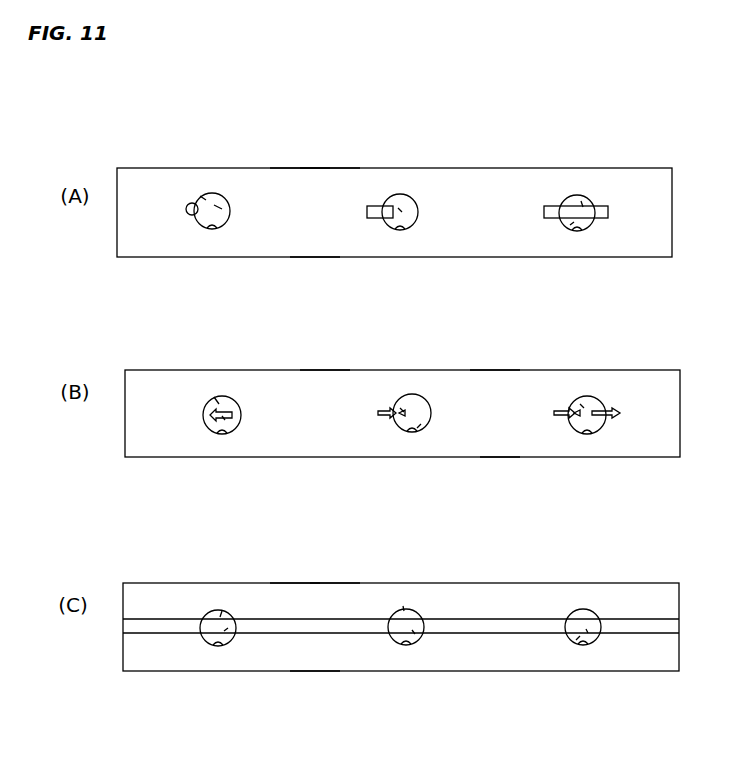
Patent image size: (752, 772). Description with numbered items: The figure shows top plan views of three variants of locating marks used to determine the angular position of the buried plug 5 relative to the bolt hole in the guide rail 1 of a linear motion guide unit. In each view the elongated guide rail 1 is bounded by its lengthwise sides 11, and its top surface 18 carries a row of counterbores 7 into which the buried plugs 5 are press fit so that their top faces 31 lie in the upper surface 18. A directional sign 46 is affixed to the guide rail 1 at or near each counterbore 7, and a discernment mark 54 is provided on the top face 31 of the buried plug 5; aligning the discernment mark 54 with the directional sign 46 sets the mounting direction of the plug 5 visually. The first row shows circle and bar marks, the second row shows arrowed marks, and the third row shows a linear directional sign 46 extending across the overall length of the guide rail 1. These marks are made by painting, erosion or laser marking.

The guide rail 1 is at (497, 192).
The buried plug 5 is at (213, 196).
The counterbore 7 is at (214, 232).
The lengthwise sides 11 is at (327, 168).
The top surface 18 is at (300, 190).
The top face 31 is at (222, 203).
The directional sign 46 is at (188, 213).
The discernment mark 54 is at (203, 196).